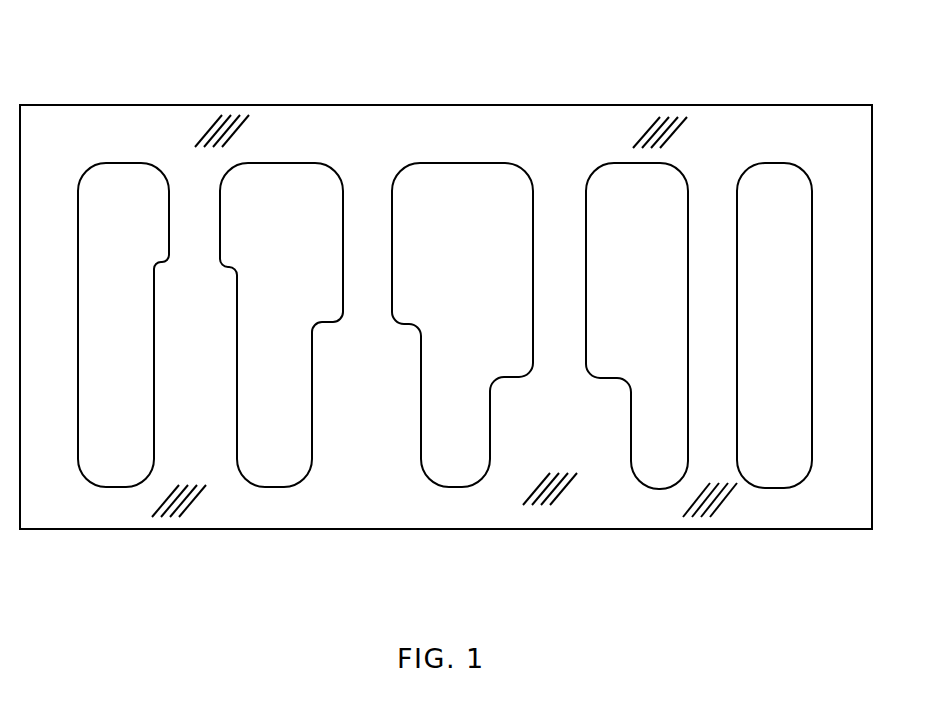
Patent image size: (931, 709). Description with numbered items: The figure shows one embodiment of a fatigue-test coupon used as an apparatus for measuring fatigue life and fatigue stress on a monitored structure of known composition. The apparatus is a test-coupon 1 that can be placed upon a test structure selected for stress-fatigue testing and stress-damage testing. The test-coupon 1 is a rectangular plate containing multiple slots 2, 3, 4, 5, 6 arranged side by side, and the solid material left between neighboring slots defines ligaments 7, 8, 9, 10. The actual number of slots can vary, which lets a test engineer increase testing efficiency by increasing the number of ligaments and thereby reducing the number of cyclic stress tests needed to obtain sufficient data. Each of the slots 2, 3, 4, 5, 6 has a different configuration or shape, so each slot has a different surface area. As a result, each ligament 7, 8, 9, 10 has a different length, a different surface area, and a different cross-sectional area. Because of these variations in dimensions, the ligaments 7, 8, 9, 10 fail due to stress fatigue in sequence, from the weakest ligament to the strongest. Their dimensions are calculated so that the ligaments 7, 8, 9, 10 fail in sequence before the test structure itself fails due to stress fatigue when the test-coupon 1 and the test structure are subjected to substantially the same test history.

The test-coupon 1 is at (576, 102).
The slot 2 is at (117, 427).
The slot 3 is at (275, 427).
The slot 4 is at (458, 432).
The slot 5 is at (660, 424).
The slot 6 is at (773, 430).
The ligament 7 is at (180, 172).
The ligament 8 is at (364, 168).
The ligament 9 is at (555, 172).
The ligament 10 is at (715, 168).